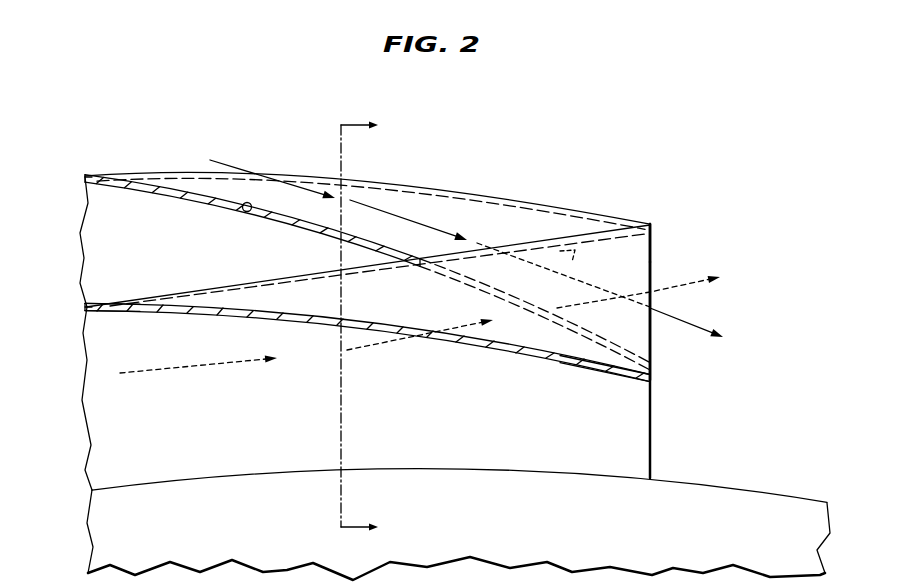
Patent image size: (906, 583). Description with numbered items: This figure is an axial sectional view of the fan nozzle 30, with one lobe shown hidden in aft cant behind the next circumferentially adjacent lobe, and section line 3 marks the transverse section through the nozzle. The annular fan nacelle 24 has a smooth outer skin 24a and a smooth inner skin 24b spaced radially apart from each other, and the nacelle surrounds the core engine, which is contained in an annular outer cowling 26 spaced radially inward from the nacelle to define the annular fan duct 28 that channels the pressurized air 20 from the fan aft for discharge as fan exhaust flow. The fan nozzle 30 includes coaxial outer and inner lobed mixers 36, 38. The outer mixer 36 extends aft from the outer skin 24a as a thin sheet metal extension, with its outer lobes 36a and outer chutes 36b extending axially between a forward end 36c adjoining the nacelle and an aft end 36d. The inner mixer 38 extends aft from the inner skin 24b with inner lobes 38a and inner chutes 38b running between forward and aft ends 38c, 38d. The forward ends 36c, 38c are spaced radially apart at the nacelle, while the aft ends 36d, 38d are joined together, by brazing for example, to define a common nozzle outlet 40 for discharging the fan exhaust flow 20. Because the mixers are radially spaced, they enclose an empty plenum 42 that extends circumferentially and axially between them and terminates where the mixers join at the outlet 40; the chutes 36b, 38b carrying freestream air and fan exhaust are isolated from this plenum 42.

The section line 3- 3 is at (371, 327).
The pressurized air 20 is at (226, 164).
The fan nacelle 24 is at (95, 196).
The outer skin 24a is at (85, 177).
The inner skin 24b is at (86, 307).
The outer cowling 26 is at (556, 529).
The fan duct 28 is at (259, 435).
The fan nozzle 30 is at (397, 255).
The outer mixer 36 is at (397, 247).
The outer lobes 36a is at (580, 218).
The outer chutes 36b is at (248, 212).
The forward end 36c is at (153, 175).
The aft end 36d is at (653, 227).
The inner mixer 38 is at (397, 309).
The inner lobes 38a is at (547, 361).
The inner chutes 38b is at (547, 248).
The forward end 38c is at (115, 305).
The aft end 38d is at (653, 263).
The nozzle outlet 40 is at (654, 437).
The plenum 42 is at (194, 263).